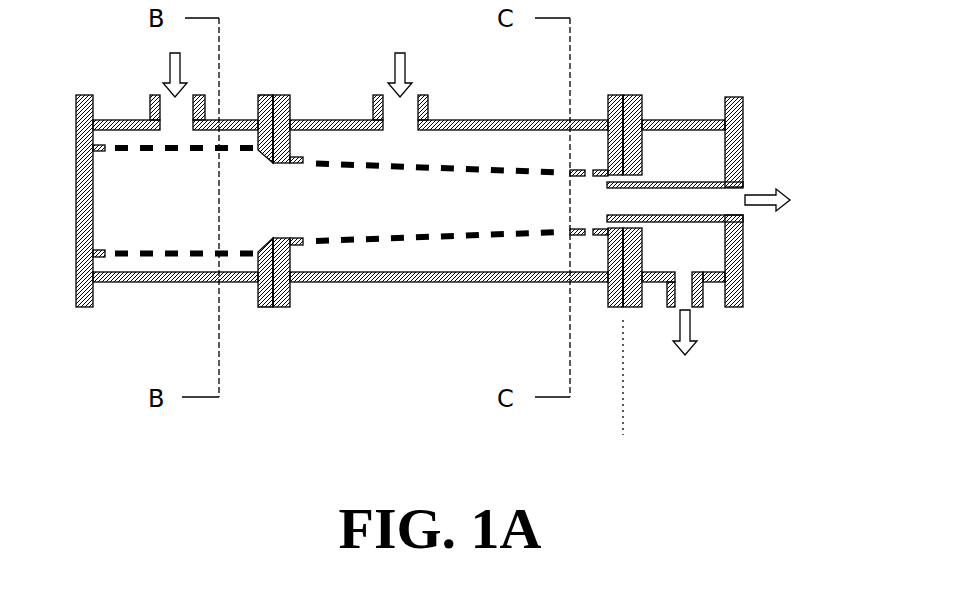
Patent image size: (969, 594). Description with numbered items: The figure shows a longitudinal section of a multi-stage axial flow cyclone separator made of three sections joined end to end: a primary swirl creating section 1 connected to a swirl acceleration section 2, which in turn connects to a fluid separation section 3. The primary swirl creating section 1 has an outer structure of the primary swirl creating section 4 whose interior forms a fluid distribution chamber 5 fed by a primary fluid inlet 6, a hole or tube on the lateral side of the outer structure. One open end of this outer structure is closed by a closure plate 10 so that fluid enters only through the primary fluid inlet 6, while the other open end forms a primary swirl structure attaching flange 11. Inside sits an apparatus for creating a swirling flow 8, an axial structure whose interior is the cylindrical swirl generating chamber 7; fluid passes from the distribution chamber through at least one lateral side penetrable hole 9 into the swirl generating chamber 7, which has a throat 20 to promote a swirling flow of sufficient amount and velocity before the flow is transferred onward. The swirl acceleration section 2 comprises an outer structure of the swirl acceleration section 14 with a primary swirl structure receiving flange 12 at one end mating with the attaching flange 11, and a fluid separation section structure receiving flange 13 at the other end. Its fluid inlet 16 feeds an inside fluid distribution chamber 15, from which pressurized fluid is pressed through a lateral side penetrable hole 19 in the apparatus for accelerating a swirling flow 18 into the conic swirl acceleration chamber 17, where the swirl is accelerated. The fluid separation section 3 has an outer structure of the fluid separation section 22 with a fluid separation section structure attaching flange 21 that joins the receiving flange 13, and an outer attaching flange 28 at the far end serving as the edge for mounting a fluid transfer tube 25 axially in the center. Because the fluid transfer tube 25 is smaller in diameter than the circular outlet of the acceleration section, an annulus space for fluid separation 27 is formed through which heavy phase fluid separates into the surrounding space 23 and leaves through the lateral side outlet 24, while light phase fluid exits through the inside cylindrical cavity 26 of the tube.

The primary swirl creating section 1 is at (117, 282).
The swirl acceleration section 2 is at (443, 282).
The fluid separation section 3 is at (715, 307).
The outer structure of the primary swirl creating section 4 is at (226, 147).
The fluid distribution chamber 5 is at (133, 135).
The primary fluid inlet 6 is at (188, 118).
The swirl generating chamber 7 is at (112, 186).
The apparatus for creating a swirling flow 8 is at (237, 150).
The lateral side penetrable hole 9 is at (252, 148).
The closure plate 10 is at (88, 100).
The primary swirl structure attaching flange 11 is at (262, 100).
The primary swirl structure receiving flange 12 is at (296, 137).
The fluid separation section structure receiving flange 13 is at (609, 100).
The outer structure of the swirl acceleration section 14 is at (462, 130).
The fluid distribution chamber 15 is at (325, 145).
The fluid inlet 16 is at (410, 118).
The swirl acceleration chamber 17 is at (485, 202).
The apparatus for accelerating a swirling flow 18 is at (527, 165).
The lateral side penetrable hole 19 is at (588, 170).
The throat 20 is at (274, 140).
The fluid separation section structure attaching flange 21 is at (645, 107).
The outer structure of the fluid separation section 22 is at (703, 120).
The space for gathering heavy phase fluid 23 is at (738, 97).
The lateral side outlet 24 is at (683, 305).
The fluid transfer tube 25 is at (662, 183).
The inside cylindrical cavity 26 is at (737, 202).
The annulus space for fluid separation 27 is at (625, 90).
The outer attaching flange 28 is at (718, 162).